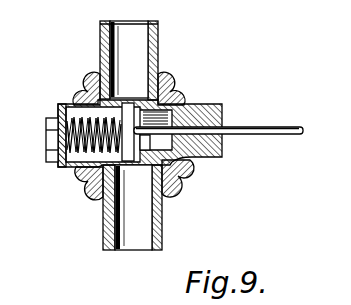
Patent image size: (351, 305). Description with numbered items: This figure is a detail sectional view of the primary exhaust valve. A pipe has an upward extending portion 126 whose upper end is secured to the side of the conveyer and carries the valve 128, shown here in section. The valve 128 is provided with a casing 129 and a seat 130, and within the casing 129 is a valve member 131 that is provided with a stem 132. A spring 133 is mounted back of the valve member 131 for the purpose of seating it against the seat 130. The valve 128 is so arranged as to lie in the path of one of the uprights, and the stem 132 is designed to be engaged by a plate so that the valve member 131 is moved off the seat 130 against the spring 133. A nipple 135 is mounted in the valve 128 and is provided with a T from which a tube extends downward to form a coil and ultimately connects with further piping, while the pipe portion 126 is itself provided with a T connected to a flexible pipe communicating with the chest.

The upward extending portion 126 is at (145, 42).
The valve 128 is at (186, 92).
The casing 129 is at (190, 168).
The seat 130 is at (126, 172).
The valve member 131 is at (90, 176).
The stem 132 is at (243, 130).
The spring 133 is at (58, 152).
The nipple 135 is at (163, 220).